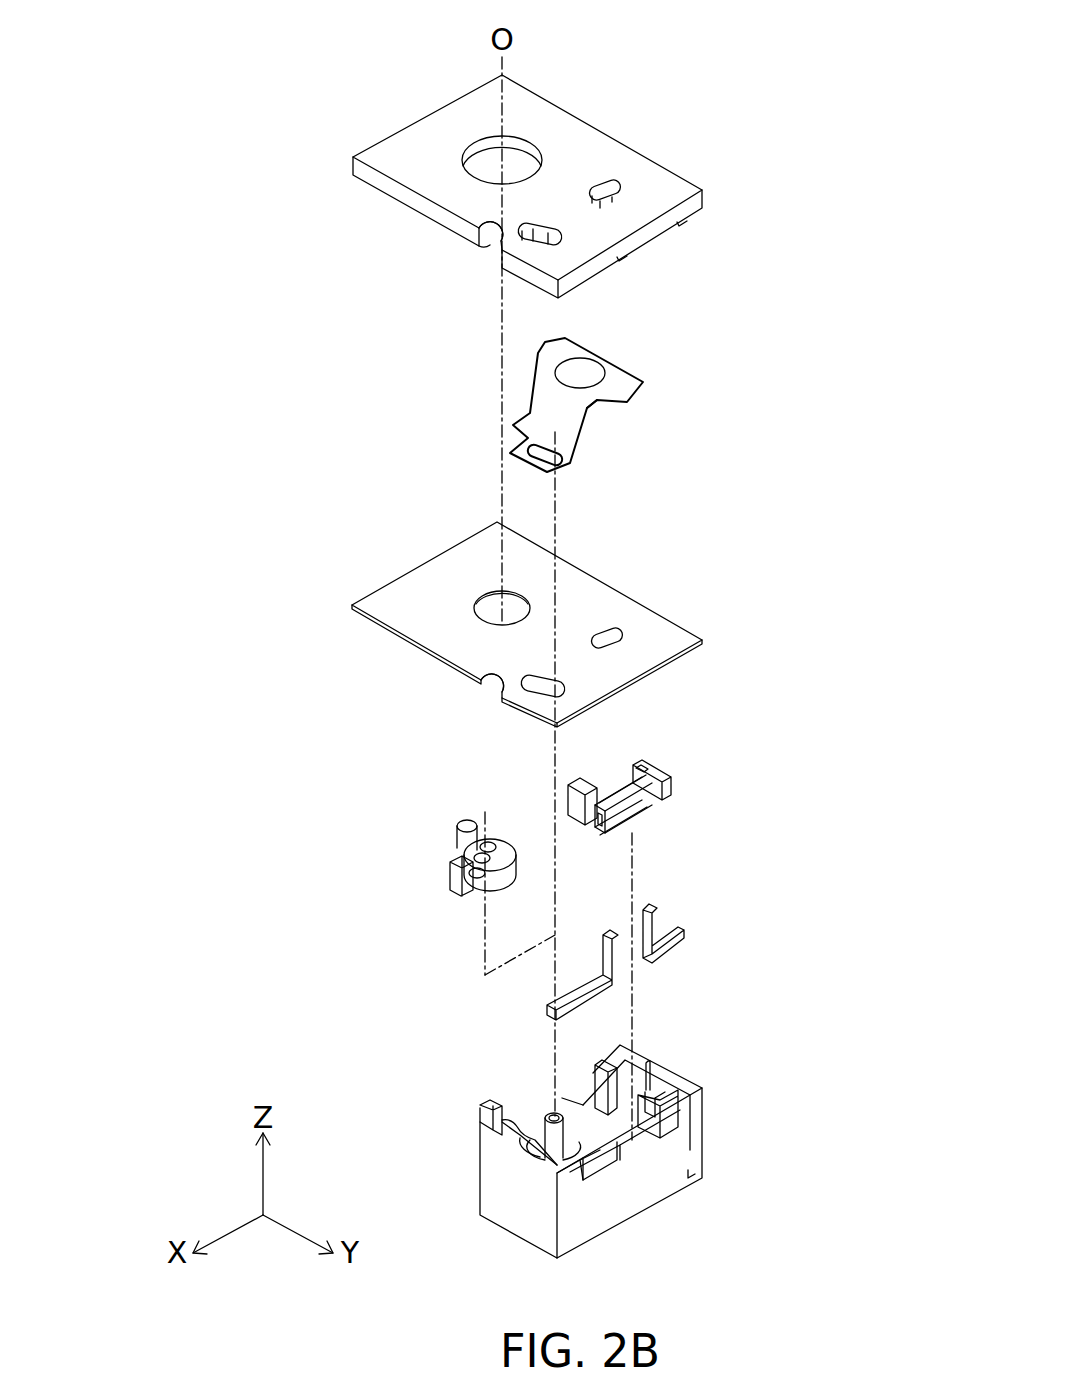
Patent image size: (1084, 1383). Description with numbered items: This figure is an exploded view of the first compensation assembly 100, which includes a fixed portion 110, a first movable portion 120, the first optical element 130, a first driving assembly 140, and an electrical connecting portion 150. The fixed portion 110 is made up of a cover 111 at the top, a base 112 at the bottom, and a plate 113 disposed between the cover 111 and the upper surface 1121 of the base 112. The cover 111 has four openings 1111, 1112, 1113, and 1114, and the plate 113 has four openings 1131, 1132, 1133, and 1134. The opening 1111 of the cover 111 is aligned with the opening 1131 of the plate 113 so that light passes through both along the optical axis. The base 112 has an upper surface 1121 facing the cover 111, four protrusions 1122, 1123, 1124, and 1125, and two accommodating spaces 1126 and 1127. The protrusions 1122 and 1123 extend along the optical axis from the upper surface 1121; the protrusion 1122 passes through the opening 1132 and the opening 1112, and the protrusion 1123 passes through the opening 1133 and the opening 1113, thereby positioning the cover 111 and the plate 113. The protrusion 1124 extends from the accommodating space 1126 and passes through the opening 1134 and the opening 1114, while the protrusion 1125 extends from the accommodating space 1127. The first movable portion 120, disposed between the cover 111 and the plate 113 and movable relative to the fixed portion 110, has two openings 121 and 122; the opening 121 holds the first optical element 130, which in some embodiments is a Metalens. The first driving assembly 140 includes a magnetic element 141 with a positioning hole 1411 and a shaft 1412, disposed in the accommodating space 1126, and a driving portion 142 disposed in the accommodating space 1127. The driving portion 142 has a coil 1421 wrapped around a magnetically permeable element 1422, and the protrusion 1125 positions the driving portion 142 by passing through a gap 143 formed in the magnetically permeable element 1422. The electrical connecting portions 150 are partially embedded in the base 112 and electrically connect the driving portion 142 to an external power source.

The first compensation assembly 100 is at (340, 25).
The fixed portion 110 is at (223, 237).
The cover 111 is at (570, 192).
The opening 1111 is at (485, 148).
The opening 1112 is at (495, 233).
The opening 1113 is at (610, 184).
The opening 1114 is at (556, 241).
The base 112 is at (598, 1123).
The upper surface 1121 is at (508, 1137).
The protrusion 1122 is at (483, 1104).
The protrusion 1123 is at (606, 1062).
The protrusion 1124 is at (551, 1116).
The protrusion 1125 is at (651, 1094).
The accommodating space 1126 is at (571, 1158).
The accommodating space 1127 is at (650, 1074).
The plate 113 is at (573, 638).
The opening 1131 is at (487, 596).
The opening 1132 is at (496, 677).
The opening 1133 is at (611, 632).
The opening 1134 is at (540, 700).
The first movable portion 120 is at (630, 413).
The opening 121 is at (587, 405).
The opening 122 is at (558, 462).
The first optical element 130 is at (578, 373).
The first driving assembly 140 is at (223, 363).
The magnetic element 141 is at (433, 859).
The positioning hole 1411 is at (456, 887).
The shaft 1412 is at (465, 830).
The driving portion 142 is at (709, 783).
The coil 1421 is at (638, 800).
The magnetically permeable element 1422 is at (668, 773).
The gap 143 is at (641, 770).
The electrical connecting portion 150 is at (548, 1007).